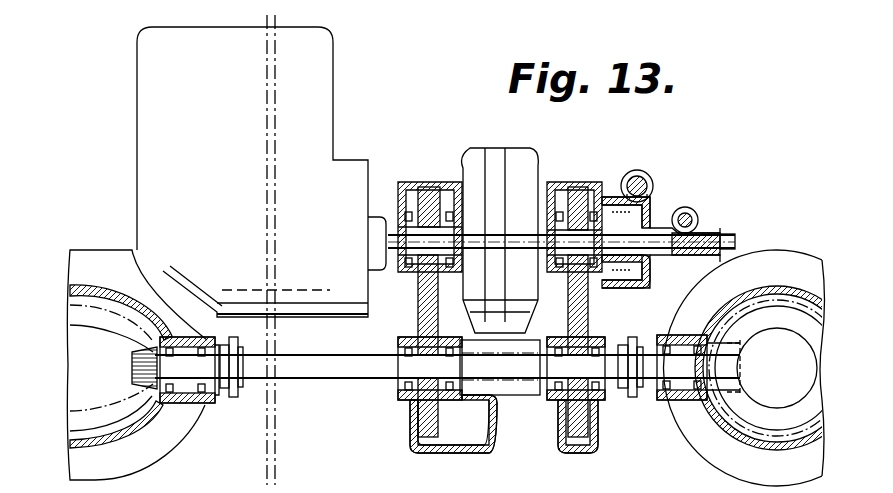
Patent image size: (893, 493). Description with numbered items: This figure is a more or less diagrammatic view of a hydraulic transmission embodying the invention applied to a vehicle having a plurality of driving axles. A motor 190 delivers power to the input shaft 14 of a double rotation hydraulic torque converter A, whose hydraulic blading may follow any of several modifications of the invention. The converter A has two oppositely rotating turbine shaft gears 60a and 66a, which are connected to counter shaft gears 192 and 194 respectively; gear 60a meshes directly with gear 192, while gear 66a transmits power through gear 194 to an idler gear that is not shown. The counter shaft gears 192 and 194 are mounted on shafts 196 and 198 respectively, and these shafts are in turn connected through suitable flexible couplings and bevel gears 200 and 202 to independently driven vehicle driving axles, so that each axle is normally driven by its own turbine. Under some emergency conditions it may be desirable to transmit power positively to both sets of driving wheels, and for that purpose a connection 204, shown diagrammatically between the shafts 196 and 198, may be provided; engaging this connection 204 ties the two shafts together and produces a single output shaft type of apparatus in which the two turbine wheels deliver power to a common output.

The motor 190 is at (328, 124).
The input shaft 14 is at (393, 236).
The turbine shaft gear 60a is at (430, 194).
The hydraulic torque converter A is at (476, 172).
The turbine shaft gear 66a is at (575, 200).
The counter shaft gear 192 is at (437, 429).
The counter shaft gear 194 is at (590, 430).
The shaft 196 is at (328, 373).
The shaft 198 is at (656, 372).
The bevel gear 200 is at (137, 365).
The bevel gear 202 is at (738, 361).
The connection 204 is at (522, 386).